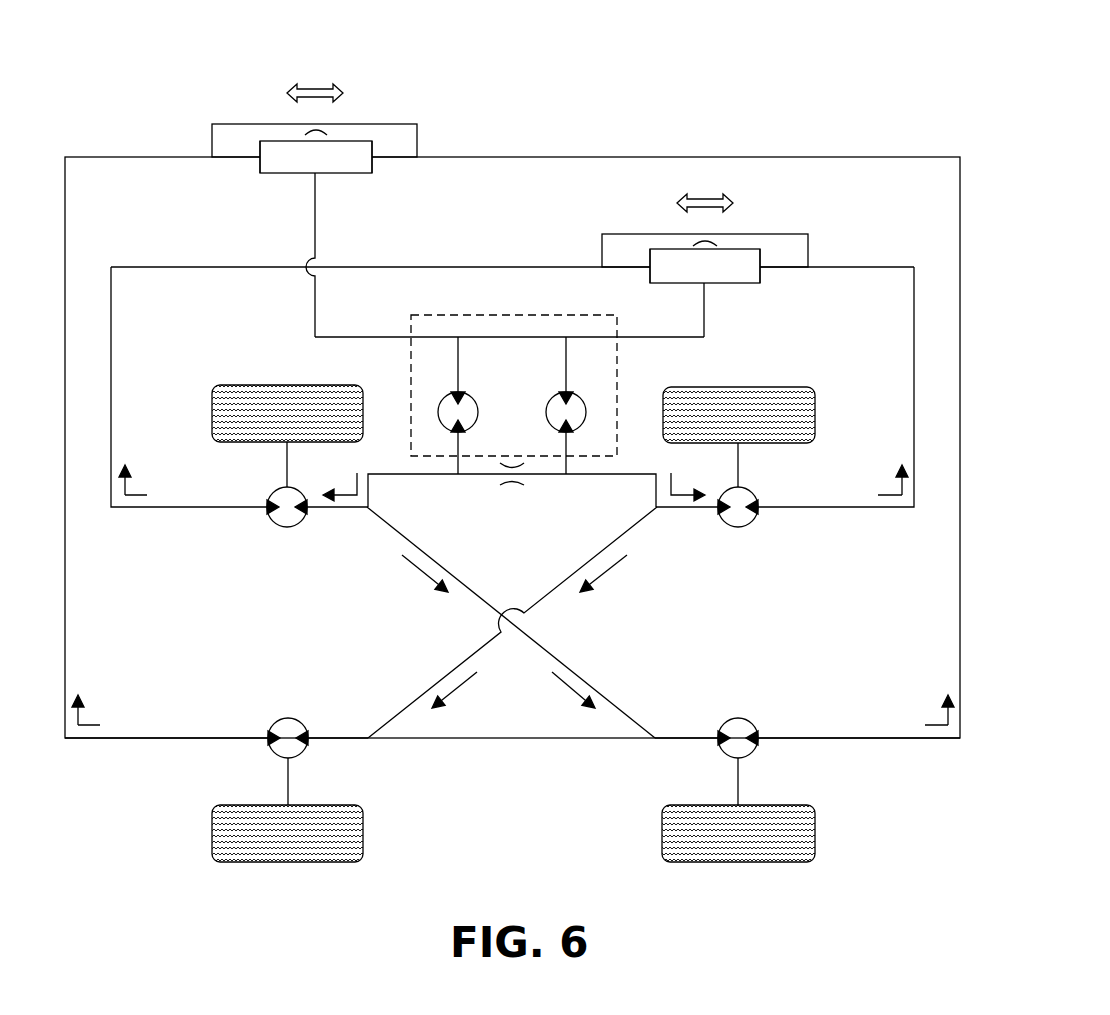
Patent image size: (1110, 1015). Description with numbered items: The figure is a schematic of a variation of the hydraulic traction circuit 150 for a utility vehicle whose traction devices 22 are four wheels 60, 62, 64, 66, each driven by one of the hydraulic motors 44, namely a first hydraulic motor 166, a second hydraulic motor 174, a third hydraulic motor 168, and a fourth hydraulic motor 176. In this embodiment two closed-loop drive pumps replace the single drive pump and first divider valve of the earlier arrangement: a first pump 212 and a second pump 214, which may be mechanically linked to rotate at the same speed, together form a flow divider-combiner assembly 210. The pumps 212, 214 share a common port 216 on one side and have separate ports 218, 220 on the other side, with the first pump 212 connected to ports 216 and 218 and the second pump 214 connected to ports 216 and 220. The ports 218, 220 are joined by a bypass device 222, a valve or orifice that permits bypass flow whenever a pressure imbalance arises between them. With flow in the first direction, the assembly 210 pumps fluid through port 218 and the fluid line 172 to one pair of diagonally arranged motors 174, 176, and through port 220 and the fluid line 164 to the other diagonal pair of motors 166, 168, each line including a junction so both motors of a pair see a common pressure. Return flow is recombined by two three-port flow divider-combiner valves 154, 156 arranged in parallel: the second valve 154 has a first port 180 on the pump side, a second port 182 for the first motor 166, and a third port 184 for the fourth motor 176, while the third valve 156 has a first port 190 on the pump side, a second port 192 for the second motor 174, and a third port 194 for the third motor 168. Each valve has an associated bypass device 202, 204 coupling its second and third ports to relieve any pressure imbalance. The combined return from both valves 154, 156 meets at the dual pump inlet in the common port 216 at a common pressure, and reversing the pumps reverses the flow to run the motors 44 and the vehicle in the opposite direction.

The hydraulic traction circuit 150 is at (753, 53).
The traction devices 22 is at (318, 385).
The wheel 60 is at (310, 862).
The wheel 62 is at (287, 415).
The wheel 64 is at (712, 862).
The wheel 66 is at (708, 387).
The hydraulic motors 44 is at (270, 494).
The first hydraulic motor 166 is at (273, 754).
The third hydraulic motor 168 is at (755, 494).
The second hydraulic motor 174 is at (232, 494).
The fourth hydraulic motor 176 is at (755, 754).
The second flow divider-combiner valve 154 is at (314, 178).
The third flow divider-combiner valve 156 is at (709, 293).
The second port 182 is at (258, 162).
The third port 184 is at (372, 165).
The second port 192 is at (648, 272).
The third port 194 is at (762, 270).
The first port 180 is at (318, 175).
The first port 190 is at (705, 285).
The bypass device 202 is at (303, 114).
The bypass device 204 is at (690, 224).
The flow divider-combiner assembly 210 is at (437, 315).
The first pump 212 is at (437, 412).
The second pump 214 is at (587, 412).
The common port 216 is at (520, 337).
The port 218 is at (452, 474).
The port 220 is at (572, 474).
The bypass device 222 is at (512, 487).
The fluid line 172 is at (386, 523).
The fluid line 164 is at (632, 528).